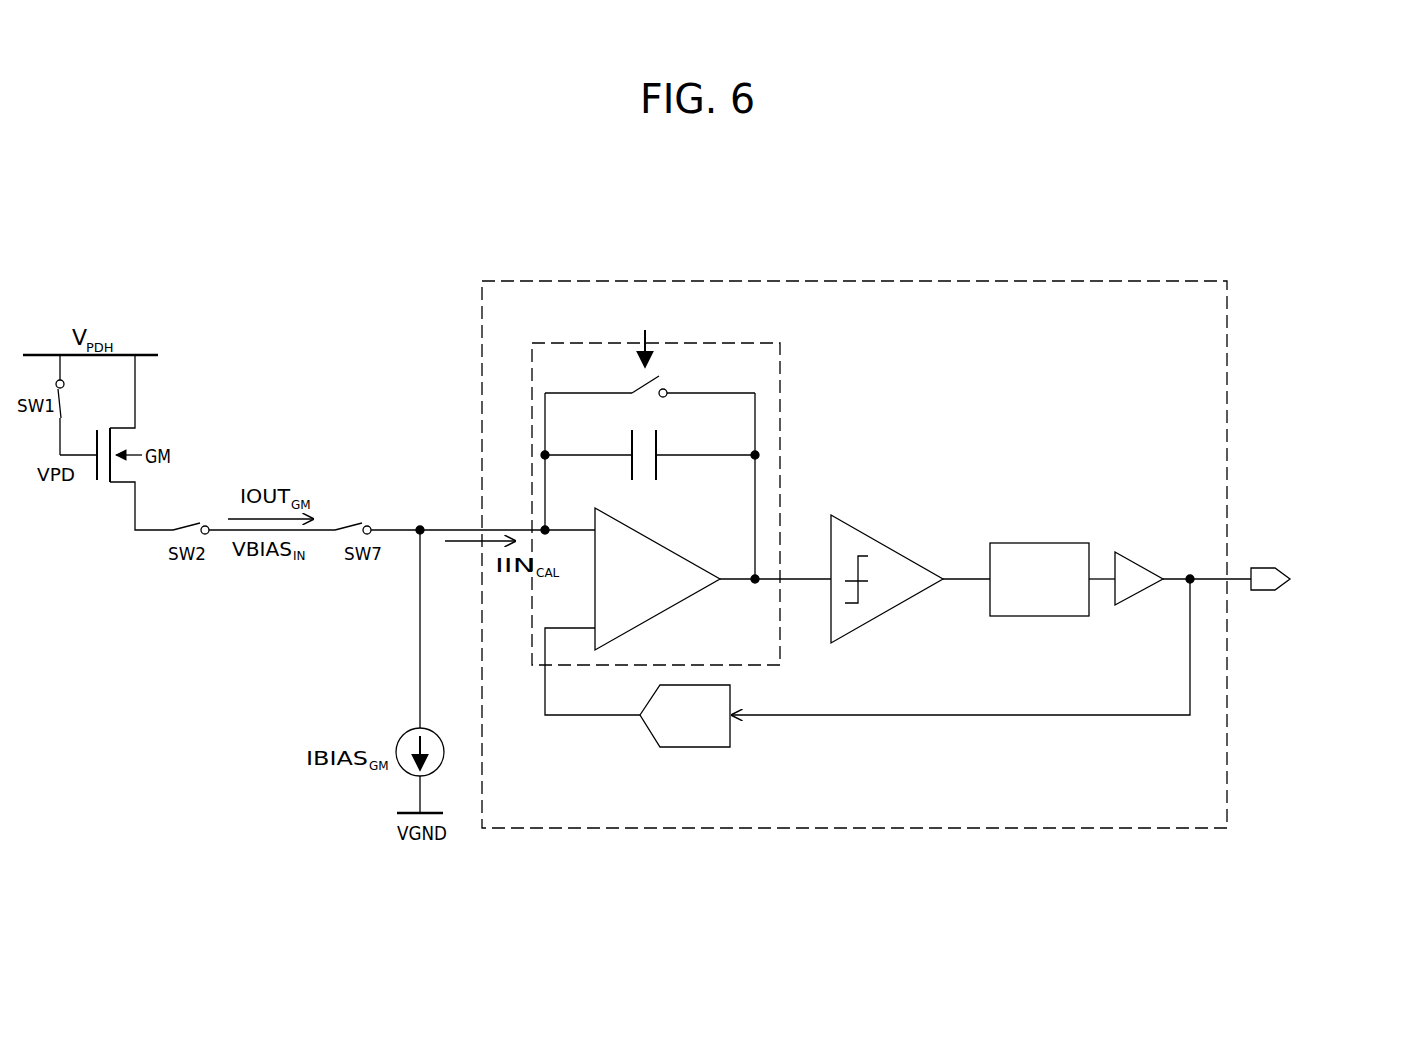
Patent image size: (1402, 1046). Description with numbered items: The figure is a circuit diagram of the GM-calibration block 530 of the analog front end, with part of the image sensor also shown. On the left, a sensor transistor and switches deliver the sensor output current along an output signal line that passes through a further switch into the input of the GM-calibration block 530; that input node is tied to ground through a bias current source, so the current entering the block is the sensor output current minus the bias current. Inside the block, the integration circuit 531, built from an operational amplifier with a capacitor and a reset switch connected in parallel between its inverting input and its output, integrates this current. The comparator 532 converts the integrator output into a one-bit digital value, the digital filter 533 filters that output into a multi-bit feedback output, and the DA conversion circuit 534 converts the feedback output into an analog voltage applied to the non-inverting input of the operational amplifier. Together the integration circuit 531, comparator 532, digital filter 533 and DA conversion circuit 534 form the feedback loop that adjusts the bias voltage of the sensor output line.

The GM-calibration block 530 is at (507, 278).
The integration circuit 531 is at (783, 366).
The comparator 532 is at (847, 521).
The digital filter 533 is at (998, 541).
The DA conversion circuit 534 is at (697, 748).